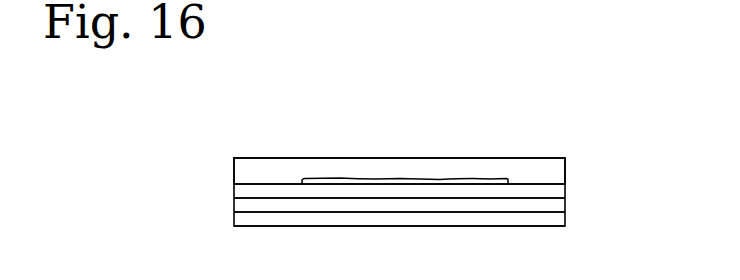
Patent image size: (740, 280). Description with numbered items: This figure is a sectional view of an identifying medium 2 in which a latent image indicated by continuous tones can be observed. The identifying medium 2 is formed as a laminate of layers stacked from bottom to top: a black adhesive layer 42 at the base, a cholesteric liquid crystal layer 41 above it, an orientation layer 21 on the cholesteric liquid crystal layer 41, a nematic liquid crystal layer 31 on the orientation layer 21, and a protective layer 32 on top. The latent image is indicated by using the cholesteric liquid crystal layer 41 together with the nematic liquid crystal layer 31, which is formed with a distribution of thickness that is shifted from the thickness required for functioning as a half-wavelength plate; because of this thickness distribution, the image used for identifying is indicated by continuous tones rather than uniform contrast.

The identifying medium 2 is at (576, 159).
The protective layer 32 is at (272, 170).
The nematic liquid crystal layer 31 is at (437, 183).
The orientation layer 21 is at (528, 192).
The cholesteric liquid crystal layer 41 is at (555, 206).
The black adhesive layer 42 is at (556, 222).